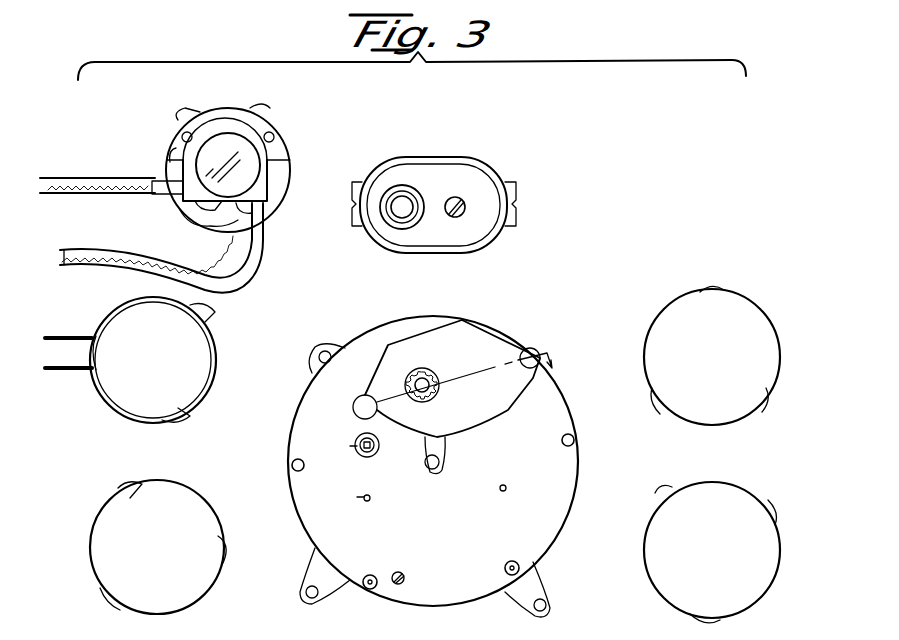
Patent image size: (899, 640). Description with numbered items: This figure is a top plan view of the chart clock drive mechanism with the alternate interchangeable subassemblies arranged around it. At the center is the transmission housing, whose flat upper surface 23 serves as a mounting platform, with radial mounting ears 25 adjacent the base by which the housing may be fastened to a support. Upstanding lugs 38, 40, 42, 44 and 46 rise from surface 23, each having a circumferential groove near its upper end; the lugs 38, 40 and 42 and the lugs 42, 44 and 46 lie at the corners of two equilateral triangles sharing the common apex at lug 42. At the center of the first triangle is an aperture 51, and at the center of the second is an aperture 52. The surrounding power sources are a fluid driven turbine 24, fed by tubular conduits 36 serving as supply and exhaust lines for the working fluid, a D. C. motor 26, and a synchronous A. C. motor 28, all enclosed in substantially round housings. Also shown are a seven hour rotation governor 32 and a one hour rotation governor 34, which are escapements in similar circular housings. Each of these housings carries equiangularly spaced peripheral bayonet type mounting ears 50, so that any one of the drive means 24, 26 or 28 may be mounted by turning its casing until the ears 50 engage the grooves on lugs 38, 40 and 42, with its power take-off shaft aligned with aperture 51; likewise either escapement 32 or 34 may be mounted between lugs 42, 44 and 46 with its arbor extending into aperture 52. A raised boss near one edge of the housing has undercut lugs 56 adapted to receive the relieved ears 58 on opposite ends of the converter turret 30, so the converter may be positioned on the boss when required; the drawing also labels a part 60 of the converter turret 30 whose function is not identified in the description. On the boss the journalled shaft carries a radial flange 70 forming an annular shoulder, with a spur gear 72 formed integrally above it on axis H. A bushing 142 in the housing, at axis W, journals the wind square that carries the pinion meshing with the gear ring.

The flat upper surface 23 is at (472, 557).
The fluid driven turbine 24 is at (297, 132).
The radial mounting ears 25 is at (330, 352).
The D. C. motor 26 is at (227, 328).
The synchronous A. C. motor 28 is at (213, 485).
The converter turret 30 is at (457, 207).
The seven hour rotation governor 32 is at (757, 287).
The one hour rotation governor 34 is at (752, 472).
The tubular conduits 36 is at (132, 252).
The upstanding lug 38 is at (304, 466).
The upstanding lug 40 is at (378, 576).
The upstanding lug 42 is at (432, 469).
The upstanding lug 44 is at (514, 562).
The upstanding lug 46 is at (576, 441).
The bayonet type mounting ears 50 is at (178, 124).
The aperture 51 is at (372, 498).
The aperture 52 is at (506, 486).
The undercut lugs 56 is at (372, 430).
The relieved ears 58 is at (352, 210).
The turret plate 60 is at (460, 242).
The radial flange 70 is at (442, 383).
The spur gear 72 is at (426, 380).
The bushing 142 is at (375, 455).